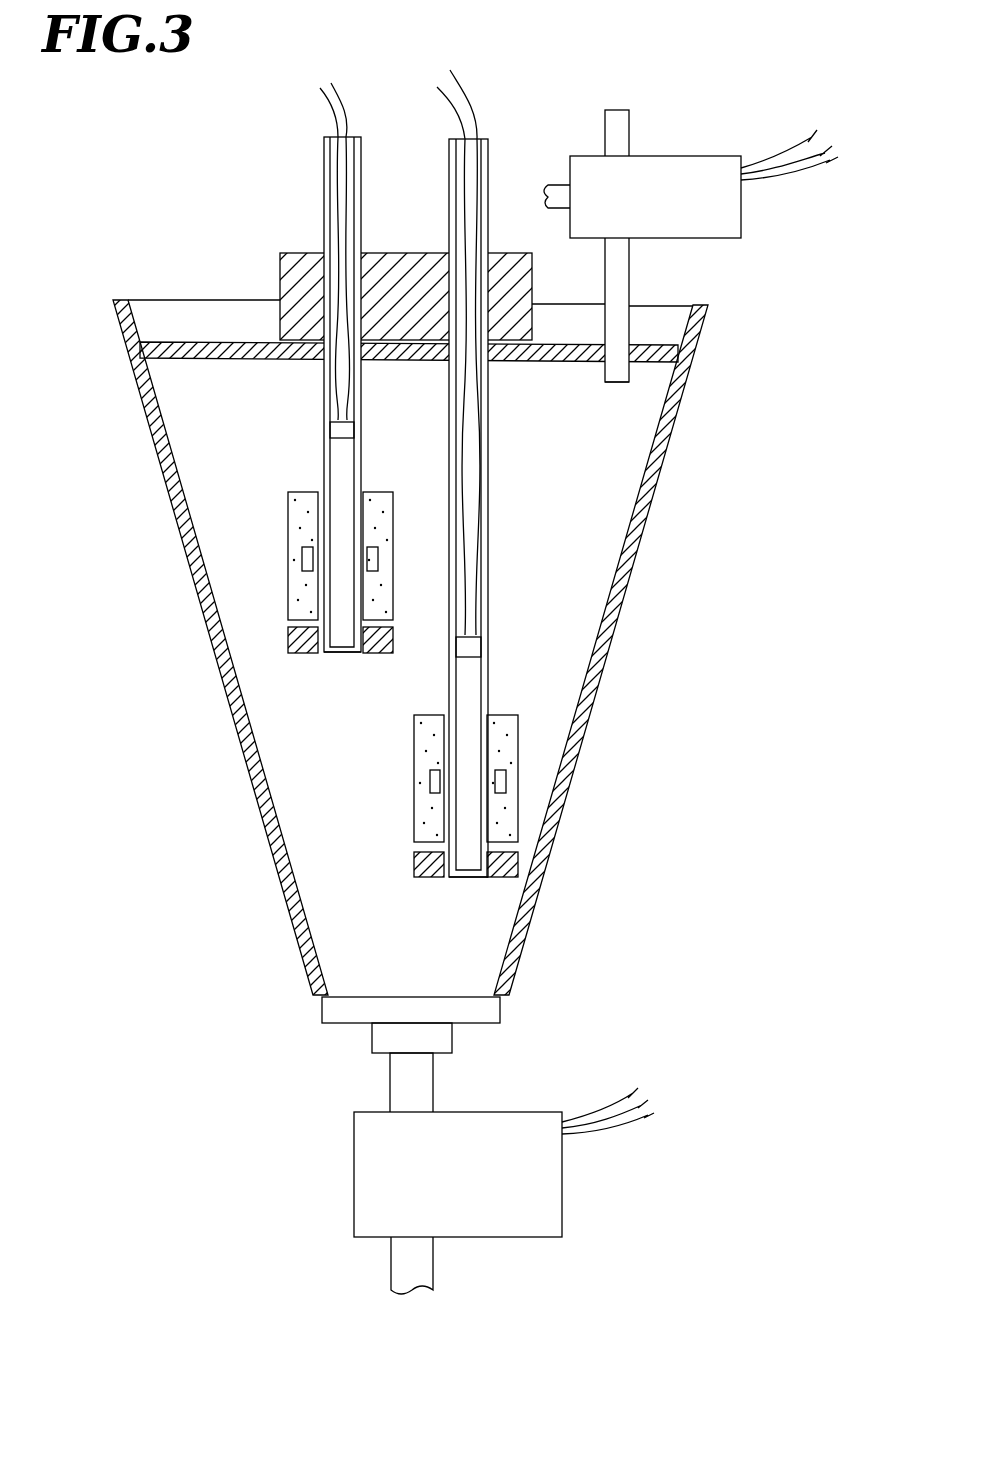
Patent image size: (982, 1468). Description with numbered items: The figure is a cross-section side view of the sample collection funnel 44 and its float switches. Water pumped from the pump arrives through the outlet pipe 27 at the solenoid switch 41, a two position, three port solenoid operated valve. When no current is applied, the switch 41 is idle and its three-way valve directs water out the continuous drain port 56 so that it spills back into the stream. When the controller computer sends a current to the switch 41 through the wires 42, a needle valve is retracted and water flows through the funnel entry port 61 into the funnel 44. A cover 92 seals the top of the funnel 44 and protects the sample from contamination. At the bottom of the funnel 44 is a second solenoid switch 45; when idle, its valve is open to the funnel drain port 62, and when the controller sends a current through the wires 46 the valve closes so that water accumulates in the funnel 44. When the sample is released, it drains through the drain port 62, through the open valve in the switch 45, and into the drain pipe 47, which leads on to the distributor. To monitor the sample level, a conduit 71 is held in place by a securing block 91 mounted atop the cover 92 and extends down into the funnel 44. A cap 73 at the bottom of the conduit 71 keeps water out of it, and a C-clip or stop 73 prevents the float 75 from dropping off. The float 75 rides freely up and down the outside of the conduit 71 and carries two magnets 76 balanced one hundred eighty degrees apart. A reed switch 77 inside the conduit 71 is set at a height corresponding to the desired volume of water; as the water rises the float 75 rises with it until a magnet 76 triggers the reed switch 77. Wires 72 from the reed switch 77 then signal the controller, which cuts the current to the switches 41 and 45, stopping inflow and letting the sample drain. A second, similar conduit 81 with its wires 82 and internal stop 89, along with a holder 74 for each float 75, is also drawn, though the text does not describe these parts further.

The outlet pipe 27 is at (629, 130).
The solenoid switch 41 is at (727, 238).
The wires 42 is at (802, 176).
The sample collection funnel 44 is at (636, 568).
The solenoid switch 45 is at (562, 1190).
The wires 46 is at (632, 1132).
The drain pipe 47 is at (433, 1263).
The continuous drain port 56 is at (557, 184).
The funnel entry port 61 is at (628, 378).
The funnel drain port 62 is at (390, 1082).
The conduit 71 is at (447, 221).
The wires 72 is at (474, 115).
The cap 73 is at (342, 657).
The holder 74 is at (290, 636).
The float 75 is at (290, 578).
The magnets 76 is at (302, 556).
The reed switch 77 is at (472, 645).
The sensor tube 81 is at (324, 165).
The lead wires 82 is at (340, 119).
The partition 89 is at (340, 433).
The securing block 91 is at (297, 253).
The cover 92 is at (200, 358).